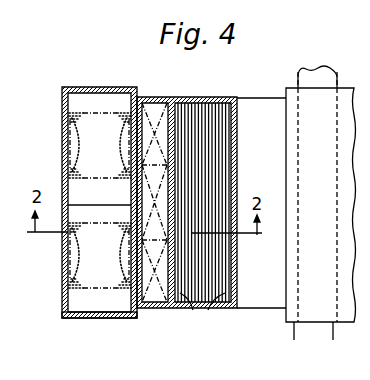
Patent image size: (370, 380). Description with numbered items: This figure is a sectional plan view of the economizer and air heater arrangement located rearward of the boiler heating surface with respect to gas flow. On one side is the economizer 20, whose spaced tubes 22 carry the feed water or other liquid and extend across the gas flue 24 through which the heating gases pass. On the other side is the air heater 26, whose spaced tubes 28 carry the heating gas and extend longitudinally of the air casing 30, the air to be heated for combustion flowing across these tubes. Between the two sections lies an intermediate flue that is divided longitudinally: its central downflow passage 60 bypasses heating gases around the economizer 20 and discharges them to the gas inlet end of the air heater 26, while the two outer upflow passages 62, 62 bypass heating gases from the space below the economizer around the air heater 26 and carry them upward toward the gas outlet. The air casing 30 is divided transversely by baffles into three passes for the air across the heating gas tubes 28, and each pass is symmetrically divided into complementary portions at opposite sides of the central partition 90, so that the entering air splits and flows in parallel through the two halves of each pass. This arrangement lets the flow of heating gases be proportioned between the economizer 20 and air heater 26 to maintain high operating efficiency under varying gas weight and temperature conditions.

The economizer 20 is at (212, 143).
The spaced tubes 22 is at (200, 98).
The gas flue 24 is at (208, 310).
The air heater 26 is at (62, 251).
The spaced tubes 28 is at (85, 124).
The air casing 30 is at (108, 318).
The central downflow passage 60 is at (153, 202).
The outer upflow passages 62 is at (153, 202).
The central partition 90 is at (114, 204).